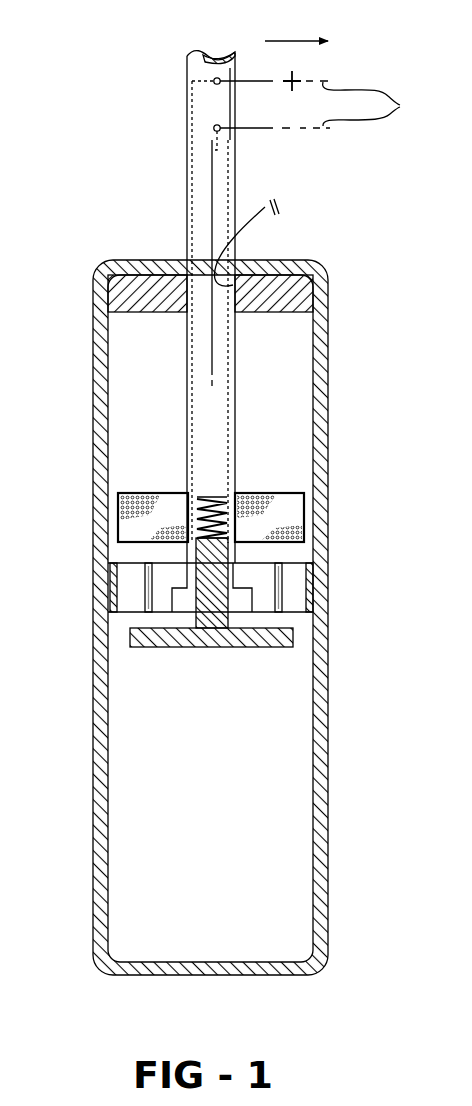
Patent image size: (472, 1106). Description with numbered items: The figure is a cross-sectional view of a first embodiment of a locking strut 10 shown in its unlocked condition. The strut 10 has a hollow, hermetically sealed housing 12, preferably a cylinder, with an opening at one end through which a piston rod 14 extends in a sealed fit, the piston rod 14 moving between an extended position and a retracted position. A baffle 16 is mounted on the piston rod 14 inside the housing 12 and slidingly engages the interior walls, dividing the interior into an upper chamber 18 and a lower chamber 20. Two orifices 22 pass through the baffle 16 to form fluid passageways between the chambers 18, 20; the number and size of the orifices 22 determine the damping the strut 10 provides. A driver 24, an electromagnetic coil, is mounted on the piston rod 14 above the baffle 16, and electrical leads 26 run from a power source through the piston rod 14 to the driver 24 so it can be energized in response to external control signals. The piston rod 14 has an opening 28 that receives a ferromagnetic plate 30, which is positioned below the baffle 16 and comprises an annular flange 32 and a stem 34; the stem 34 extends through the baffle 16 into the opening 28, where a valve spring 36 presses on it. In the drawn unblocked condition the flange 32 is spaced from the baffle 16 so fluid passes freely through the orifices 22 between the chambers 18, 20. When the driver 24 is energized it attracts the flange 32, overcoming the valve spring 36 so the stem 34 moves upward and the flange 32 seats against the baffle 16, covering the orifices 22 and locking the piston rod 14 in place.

The locking strut 10 is at (319, 239).
The housing 12 is at (328, 782).
The piston rod 14 is at (187, 222).
The baffle 16 is at (128, 583).
The upper chamber 18 is at (145, 418).
The lower chamber 20 is at (140, 918).
The orifice 22 is at (143, 593).
The driver 24 is at (288, 512).
The electrical leads 26 is at (319, 73).
The opening 28 is at (210, 560).
The ferromagnetic plate 30 is at (204, 661).
The annular flange 32 is at (285, 648).
The stem 34 is at (218, 598).
The valve spring 36 is at (205, 492).